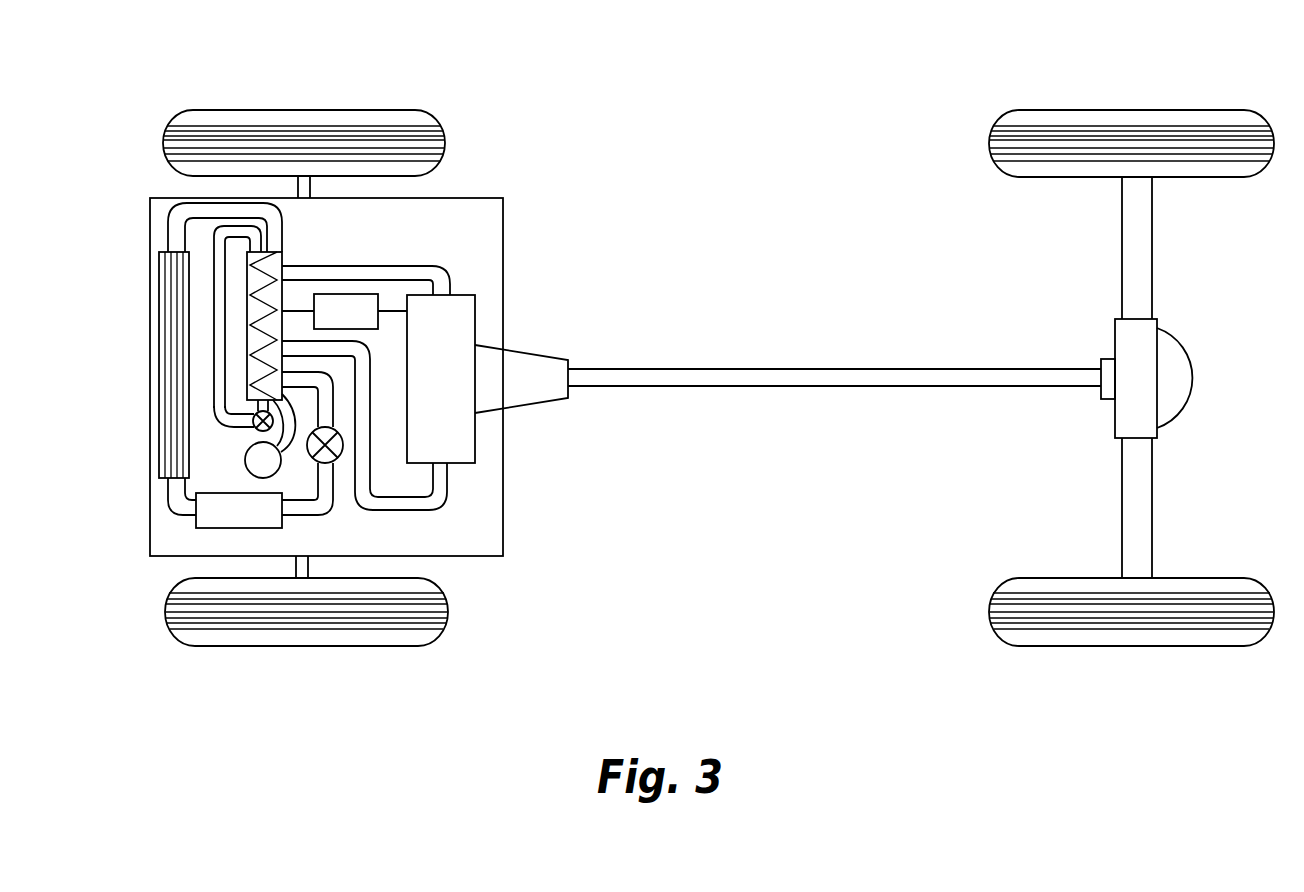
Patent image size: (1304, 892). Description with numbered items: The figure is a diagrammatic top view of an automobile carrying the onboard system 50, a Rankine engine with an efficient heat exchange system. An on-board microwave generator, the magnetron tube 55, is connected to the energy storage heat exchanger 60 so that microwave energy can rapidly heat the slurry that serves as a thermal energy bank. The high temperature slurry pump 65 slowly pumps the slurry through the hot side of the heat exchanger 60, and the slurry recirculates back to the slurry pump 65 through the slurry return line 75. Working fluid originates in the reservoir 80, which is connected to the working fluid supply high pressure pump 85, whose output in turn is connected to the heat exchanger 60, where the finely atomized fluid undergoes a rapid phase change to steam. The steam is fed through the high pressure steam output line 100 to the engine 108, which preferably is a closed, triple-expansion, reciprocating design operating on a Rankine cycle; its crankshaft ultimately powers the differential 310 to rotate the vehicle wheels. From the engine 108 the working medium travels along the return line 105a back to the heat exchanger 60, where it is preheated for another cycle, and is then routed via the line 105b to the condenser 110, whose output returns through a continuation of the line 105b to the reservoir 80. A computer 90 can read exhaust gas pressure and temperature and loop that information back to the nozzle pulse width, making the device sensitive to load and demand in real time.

The onboard system 50 is at (539, 152).
The magnetron tube 55 is at (280, 473).
The energy storage heat exchanger 60 is at (284, 243).
The high temperature slurry pump 65 is at (255, 429).
The slurry return line 75 is at (213, 230).
The reservoir 80 is at (253, 525).
The working fluid supply high pressure pump 85 is at (340, 463).
The computer 90 is at (361, 325).
The high pressure steam output line 100 is at (448, 490).
The return line 105a is at (420, 265).
The line 105b is at (168, 238).
The engine 108 is at (462, 383).
The condenser 110 is at (155, 368).
The differential 310 is at (1193, 378).